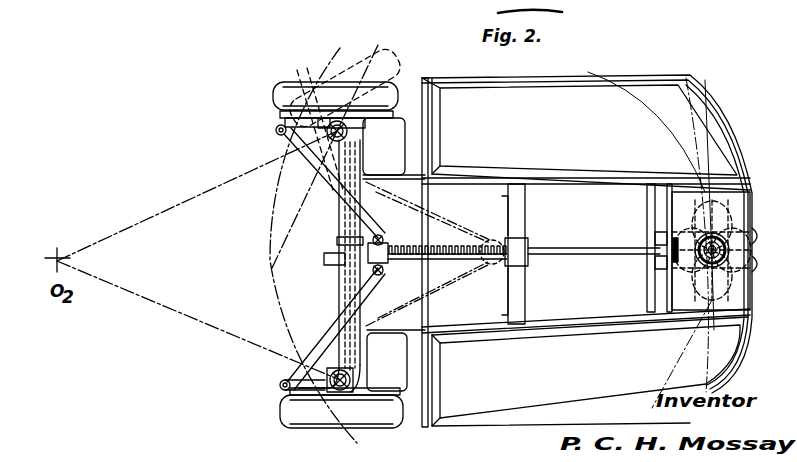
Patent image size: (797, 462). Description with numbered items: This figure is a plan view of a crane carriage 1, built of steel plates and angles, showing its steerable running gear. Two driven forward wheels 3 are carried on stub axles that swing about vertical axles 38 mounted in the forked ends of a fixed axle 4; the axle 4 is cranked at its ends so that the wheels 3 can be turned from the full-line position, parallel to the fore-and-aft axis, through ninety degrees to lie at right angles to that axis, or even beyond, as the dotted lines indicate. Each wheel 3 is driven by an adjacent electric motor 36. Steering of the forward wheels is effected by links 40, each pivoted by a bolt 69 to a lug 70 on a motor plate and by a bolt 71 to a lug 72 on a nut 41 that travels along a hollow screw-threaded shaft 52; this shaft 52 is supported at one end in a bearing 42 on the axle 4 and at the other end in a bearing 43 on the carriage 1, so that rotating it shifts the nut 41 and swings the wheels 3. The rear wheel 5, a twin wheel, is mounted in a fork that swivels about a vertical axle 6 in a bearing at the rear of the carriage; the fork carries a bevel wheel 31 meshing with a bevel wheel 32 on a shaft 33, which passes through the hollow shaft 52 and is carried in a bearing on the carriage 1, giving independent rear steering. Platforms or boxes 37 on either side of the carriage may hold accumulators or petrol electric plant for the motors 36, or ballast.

The carriage 1 is at (650, 290).
The forward wheel 3 is at (275, 95).
The fixed axle 4 is at (344, 340).
The rear wheel 5 is at (757, 238).
The vertical axle 6 is at (724, 242).
The bevel wheel 31 is at (657, 238).
The bevel wheel 32 is at (672, 262).
The shaft 33 is at (577, 245).
The electric motor 36 is at (394, 254).
The platform or box 37 is at (587, 250).
The vertical axle 38 is at (346, 125).
The link 40 is at (332, 170).
The nut 41 is at (381, 276).
The bearing 42 is at (342, 265).
The bearing 43 is at (527, 268).
The hollow screw-threaded shaft 52 is at (447, 264).
The bolt 69 is at (276, 132).
The lug 70 is at (283, 121).
The bolt 71 is at (384, 244).
The lug 72 is at (345, 242).